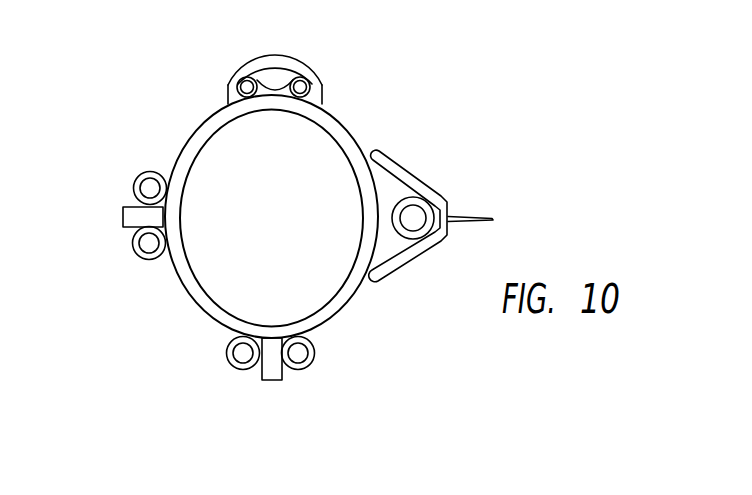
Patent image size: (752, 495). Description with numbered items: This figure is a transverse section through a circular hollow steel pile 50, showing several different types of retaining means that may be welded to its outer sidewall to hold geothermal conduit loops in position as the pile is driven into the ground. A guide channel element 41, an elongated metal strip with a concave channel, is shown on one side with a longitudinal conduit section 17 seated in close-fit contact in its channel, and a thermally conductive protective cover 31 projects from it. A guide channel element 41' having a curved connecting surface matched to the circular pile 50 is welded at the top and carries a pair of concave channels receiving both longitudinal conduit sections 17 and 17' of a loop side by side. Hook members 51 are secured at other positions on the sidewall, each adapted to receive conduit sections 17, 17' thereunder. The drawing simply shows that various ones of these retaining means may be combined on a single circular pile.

The circular hollow steel pile 50 is at (362, 127).
The guide channel element 41 is at (423, 225).
The guide channel element 41' is at (236, 79).
The longitudinal conduit section 17 is at (296, 195).
The longitudinal conduit section 17' is at (192, 173).
The thermally conductive protective cover 31 is at (493, 220).
The hook member 51 is at (123, 218).